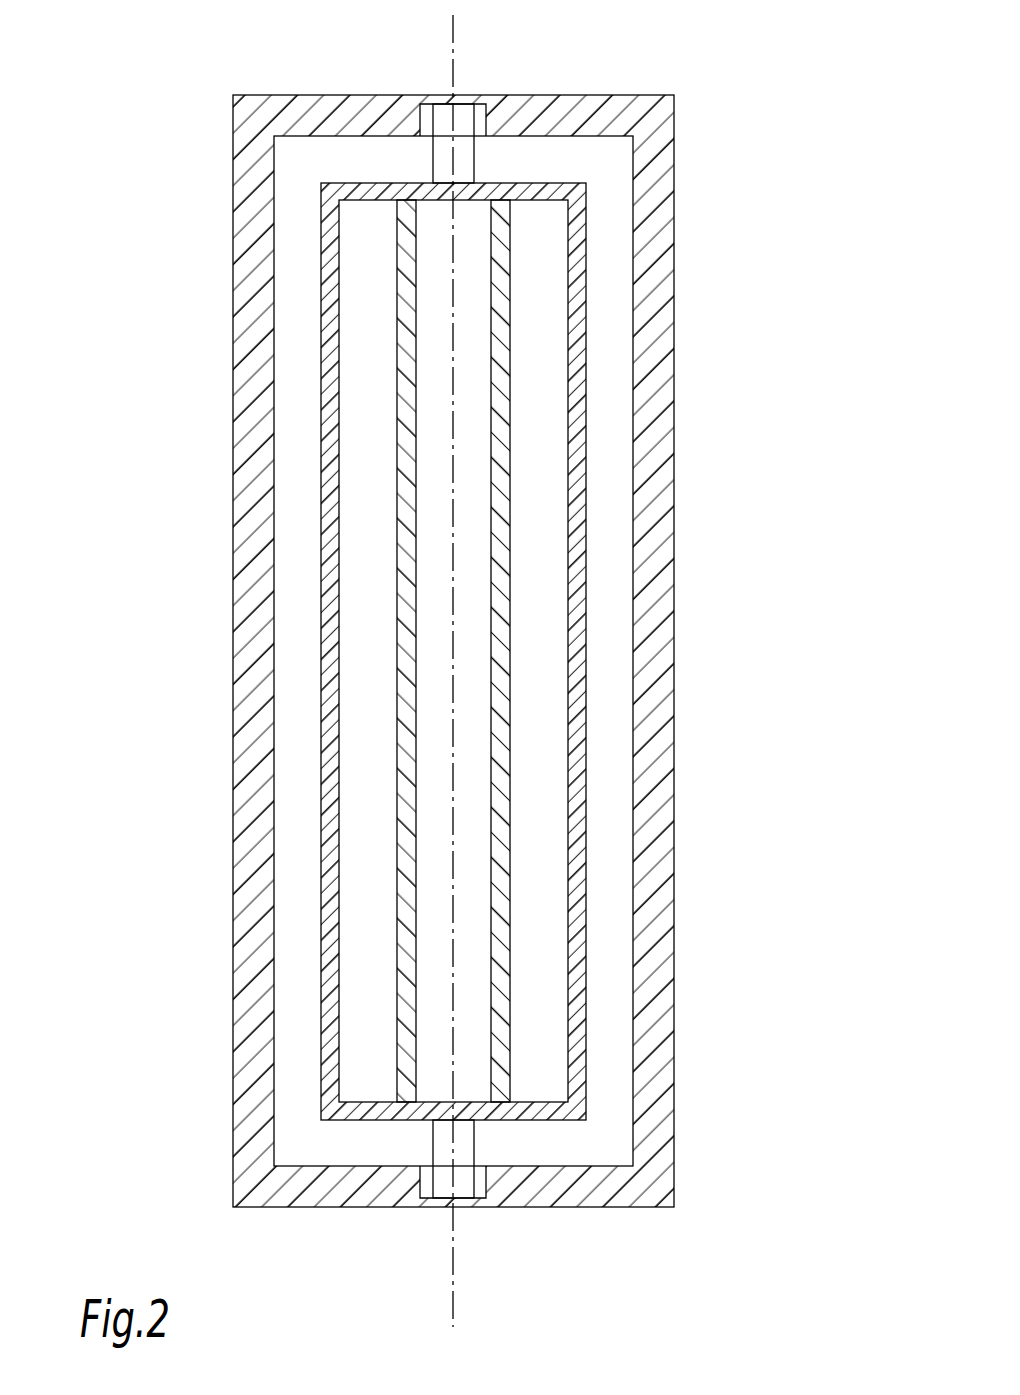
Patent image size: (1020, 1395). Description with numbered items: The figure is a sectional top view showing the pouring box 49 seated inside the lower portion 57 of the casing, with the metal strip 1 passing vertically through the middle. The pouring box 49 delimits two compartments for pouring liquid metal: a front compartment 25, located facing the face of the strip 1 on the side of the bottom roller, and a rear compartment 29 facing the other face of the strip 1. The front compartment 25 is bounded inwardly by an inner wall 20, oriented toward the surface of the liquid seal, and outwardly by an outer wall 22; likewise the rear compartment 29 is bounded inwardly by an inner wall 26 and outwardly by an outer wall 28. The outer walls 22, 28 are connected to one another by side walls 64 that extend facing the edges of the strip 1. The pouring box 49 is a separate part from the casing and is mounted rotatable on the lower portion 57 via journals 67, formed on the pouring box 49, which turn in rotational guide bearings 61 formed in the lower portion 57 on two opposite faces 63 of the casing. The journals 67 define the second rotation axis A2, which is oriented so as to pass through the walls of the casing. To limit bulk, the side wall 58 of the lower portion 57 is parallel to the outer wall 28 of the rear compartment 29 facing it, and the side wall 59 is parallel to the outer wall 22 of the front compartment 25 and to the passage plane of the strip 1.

The strip 1 is at (590, 663).
The inner wall 20 is at (497, 608).
The outer wall 22 is at (575, 690).
The front compartment 25 is at (535, 818).
The inner wall 26 is at (408, 655).
The outer wall 28 is at (328, 752).
The rear compartment 29 is at (471, 703).
The pouring box 49 is at (298, 336).
The lower portion of the casing 57 is at (440, 652).
The side wall 58 is at (257, 409).
The side wall 59 is at (647, 529).
The rotational guide bearing 61 is at (425, 123).
The opposite faces of the casing 63 is at (356, 110).
The side wall 64 is at (352, 193).
The journal 67 is at (462, 169).
The second rotation axis A2 is at (469, 14).